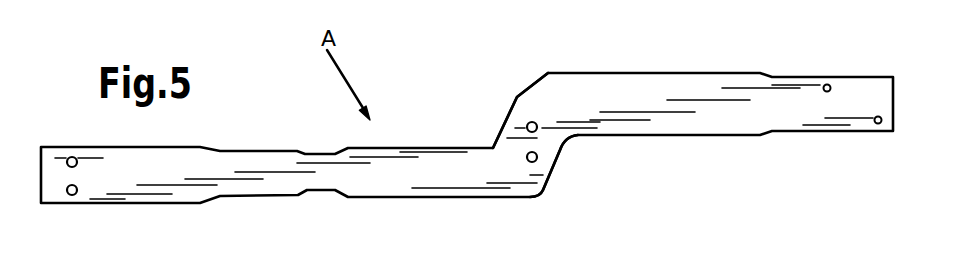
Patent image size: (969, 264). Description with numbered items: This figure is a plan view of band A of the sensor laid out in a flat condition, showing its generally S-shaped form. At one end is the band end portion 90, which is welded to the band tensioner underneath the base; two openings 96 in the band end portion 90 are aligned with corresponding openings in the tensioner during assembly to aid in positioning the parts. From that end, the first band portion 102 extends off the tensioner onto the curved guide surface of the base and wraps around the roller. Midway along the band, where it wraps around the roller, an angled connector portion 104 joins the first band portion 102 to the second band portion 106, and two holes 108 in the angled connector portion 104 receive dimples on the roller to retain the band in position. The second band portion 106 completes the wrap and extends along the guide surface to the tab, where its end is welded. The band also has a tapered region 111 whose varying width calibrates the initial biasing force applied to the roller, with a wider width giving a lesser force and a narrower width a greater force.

The band end portion 90 is at (848, 133).
The openings 96 is at (876, 117).
The first band portion 102 is at (733, 120).
The angled connector portion 104 is at (553, 165).
The second band portion 106 is at (453, 198).
The holes 108 is at (527, 157).
The tapered region 111 is at (338, 175).